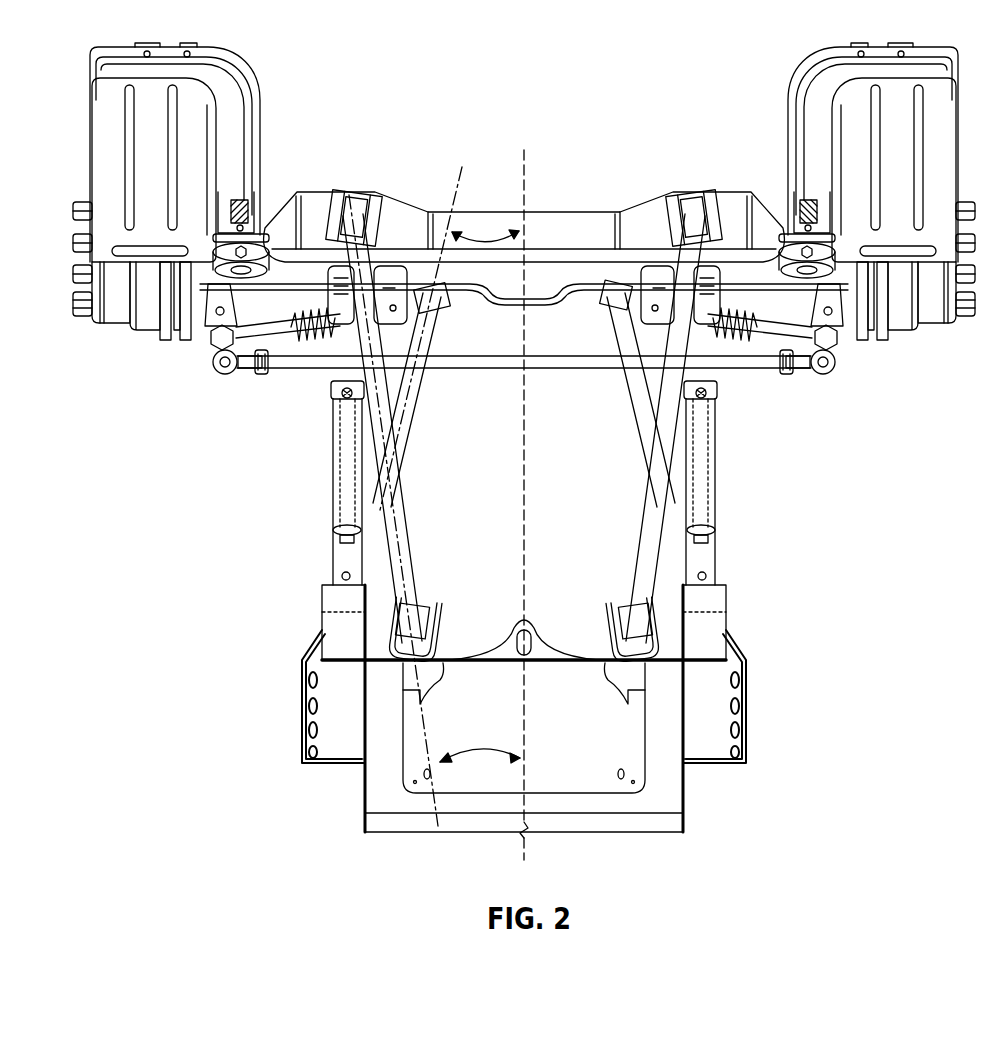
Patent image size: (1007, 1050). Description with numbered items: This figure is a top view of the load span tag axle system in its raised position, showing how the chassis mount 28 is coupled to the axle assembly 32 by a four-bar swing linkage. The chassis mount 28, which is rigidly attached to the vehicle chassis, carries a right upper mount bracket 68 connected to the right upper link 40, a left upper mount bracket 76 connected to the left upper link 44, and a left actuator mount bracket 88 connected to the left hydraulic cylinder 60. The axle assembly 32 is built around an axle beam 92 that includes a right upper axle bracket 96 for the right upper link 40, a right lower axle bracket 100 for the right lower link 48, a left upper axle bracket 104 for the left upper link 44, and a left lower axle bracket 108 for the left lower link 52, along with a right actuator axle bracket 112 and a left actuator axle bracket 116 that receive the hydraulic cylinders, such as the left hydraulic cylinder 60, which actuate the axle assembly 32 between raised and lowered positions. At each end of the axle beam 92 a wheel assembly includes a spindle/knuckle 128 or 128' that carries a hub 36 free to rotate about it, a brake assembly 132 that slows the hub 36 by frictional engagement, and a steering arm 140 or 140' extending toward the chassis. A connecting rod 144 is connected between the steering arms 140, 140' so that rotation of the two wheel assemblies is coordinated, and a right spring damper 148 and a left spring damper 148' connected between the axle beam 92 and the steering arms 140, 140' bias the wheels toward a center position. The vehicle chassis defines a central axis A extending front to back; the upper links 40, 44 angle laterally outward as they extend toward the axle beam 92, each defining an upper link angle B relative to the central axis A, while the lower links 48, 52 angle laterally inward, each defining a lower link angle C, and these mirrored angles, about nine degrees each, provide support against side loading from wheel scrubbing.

The chassis mount 28 is at (342, 716).
The axle assembly 32 is at (496, 124).
The hub 36 is at (148, 322).
The right upper link 40 is at (416, 590).
The left upper link 44 is at (635, 572).
The right lower link 48 is at (440, 340).
The left lower link 52 is at (655, 428).
The left hydraulic cylinder 60 is at (718, 516).
The right upper mount bracket 68 is at (393, 643).
The left upper mount bracket 76 is at (614, 628).
The left actuator mount bracket 88 is at (720, 605).
The axle beam 92 is at (654, 190).
The right upper axle bracket 96 is at (357, 203).
The right lower axle bracket 100 is at (420, 249).
The left upper axle bracket 104 is at (700, 195).
The left lower axle bracket 108 is at (612, 280).
The right actuator axle bracket 112 is at (398, 245).
The left actuator axle bracket 116 is at (657, 290).
The spindle/knuckle 128 is at (138, 179).
The spindle/knuckle 128' is at (841, 179).
The brake assembly 132 is at (256, 218).
The steering arm 140 is at (199, 341).
The left steering arm 140' is at (824, 363).
The connecting rod 144 is at (598, 352).
The right spring damper 148 is at (295, 348).
The left spring damper 148' is at (753, 349).
The central axis A is at (526, 170).
The upper link angle B is at (483, 745).
The lower link angle C is at (480, 240).